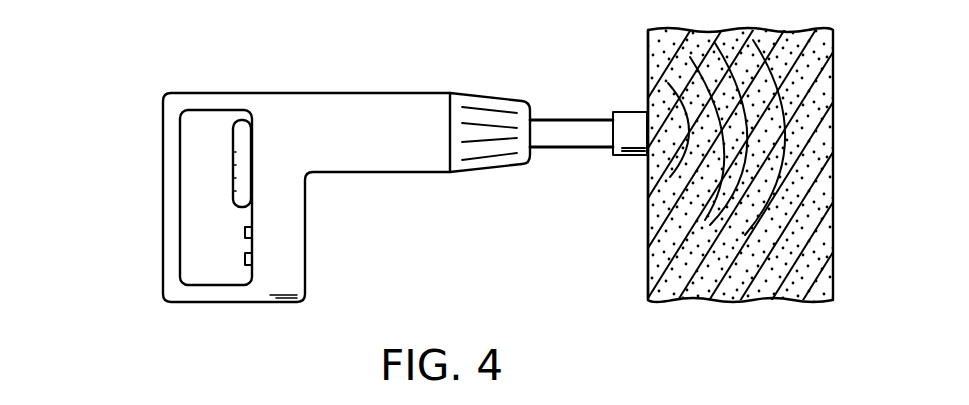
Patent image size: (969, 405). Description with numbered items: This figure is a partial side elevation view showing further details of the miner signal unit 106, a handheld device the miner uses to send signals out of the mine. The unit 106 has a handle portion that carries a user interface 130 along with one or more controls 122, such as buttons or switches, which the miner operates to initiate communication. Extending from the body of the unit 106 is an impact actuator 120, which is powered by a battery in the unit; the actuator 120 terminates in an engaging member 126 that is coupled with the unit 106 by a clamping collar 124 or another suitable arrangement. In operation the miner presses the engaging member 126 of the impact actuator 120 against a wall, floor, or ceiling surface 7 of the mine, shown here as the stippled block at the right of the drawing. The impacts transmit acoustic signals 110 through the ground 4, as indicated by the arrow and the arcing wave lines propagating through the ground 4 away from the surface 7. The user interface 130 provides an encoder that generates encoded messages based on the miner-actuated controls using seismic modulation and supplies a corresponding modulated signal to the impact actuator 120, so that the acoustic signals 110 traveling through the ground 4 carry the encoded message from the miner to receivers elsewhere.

The miner signal unit 106 is at (130, 54).
The user interface 130 is at (238, 120).
The controls 122 is at (233, 276).
The impact actuator 120 is at (510, 78).
The clamping collar 124 is at (484, 172).
The engaging member 126 is at (623, 156).
The surface 7 is at (648, 72).
The ground 4 is at (833, 140).
The acoustic signals 110 is at (668, 204).